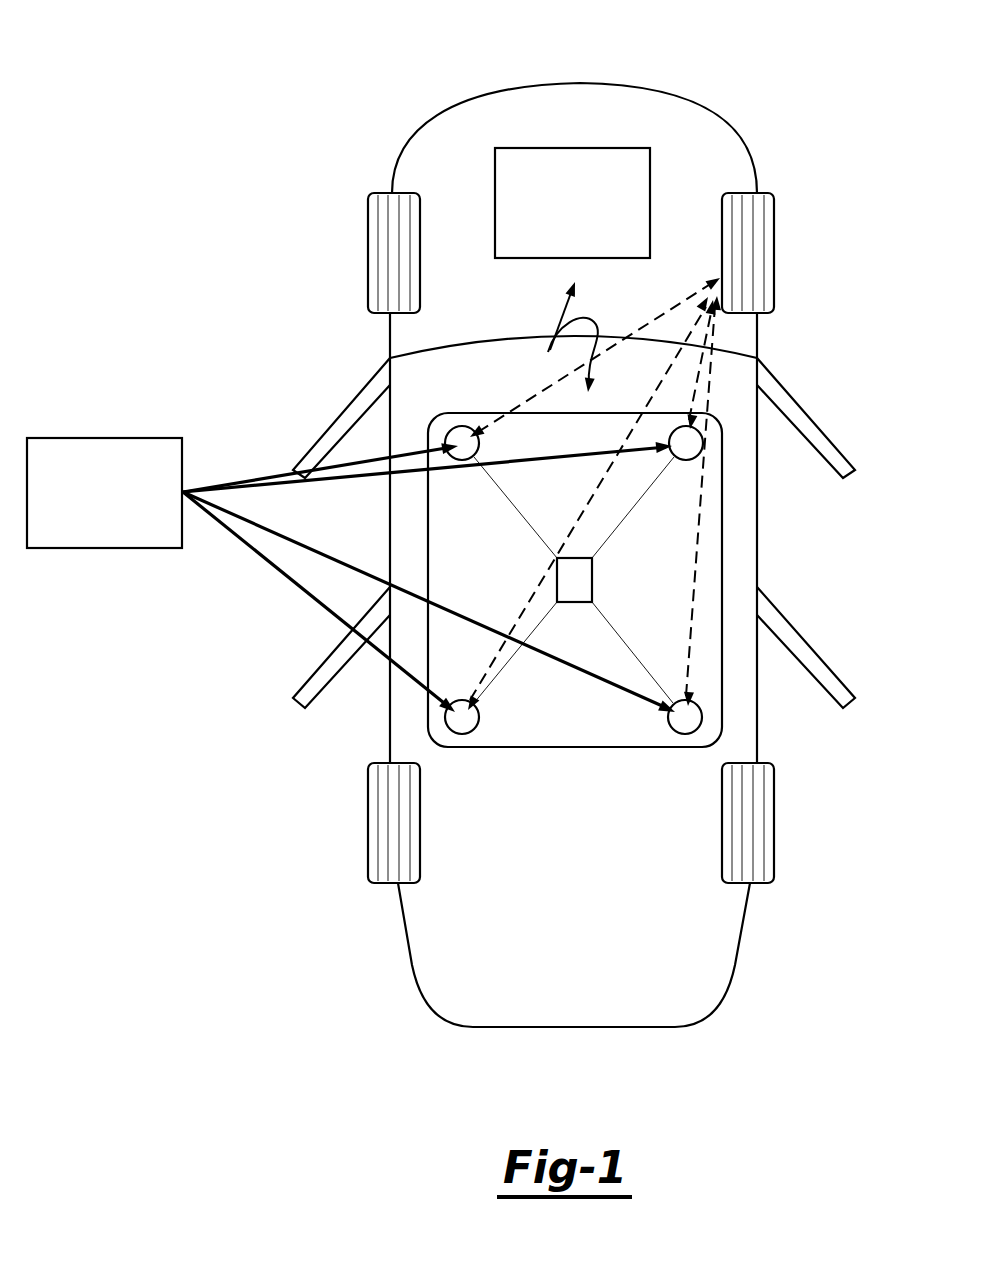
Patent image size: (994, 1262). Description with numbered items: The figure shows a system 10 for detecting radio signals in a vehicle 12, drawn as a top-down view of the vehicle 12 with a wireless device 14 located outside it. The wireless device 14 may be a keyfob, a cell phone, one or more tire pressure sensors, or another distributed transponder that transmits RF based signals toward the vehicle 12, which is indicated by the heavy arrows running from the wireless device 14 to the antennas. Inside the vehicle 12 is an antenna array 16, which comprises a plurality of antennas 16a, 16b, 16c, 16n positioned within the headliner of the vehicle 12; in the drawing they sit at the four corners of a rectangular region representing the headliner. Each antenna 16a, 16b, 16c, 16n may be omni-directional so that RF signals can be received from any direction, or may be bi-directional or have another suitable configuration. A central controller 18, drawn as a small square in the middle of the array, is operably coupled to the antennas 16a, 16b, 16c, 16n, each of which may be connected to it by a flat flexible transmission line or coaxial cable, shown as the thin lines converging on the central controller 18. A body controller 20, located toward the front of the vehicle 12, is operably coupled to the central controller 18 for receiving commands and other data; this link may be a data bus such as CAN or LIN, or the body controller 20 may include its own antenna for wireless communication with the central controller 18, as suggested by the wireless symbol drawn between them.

The system 10 is at (808, 76).
The vehicle 12 is at (590, 83).
The wireless device 14 is at (102, 438).
The antenna array 16 is at (721, 530).
The antenna 16a is at (705, 437).
The antenna 16b is at (458, 432).
The antenna 16c is at (472, 733).
The antenna 16n is at (685, 733).
The central controller 18 is at (592, 582).
The body controller 20 is at (572, 148).